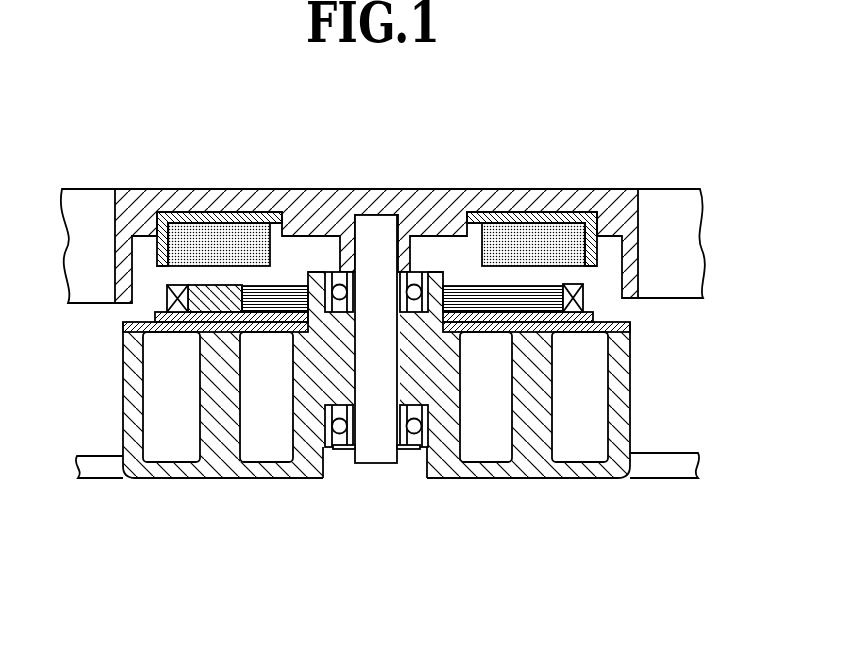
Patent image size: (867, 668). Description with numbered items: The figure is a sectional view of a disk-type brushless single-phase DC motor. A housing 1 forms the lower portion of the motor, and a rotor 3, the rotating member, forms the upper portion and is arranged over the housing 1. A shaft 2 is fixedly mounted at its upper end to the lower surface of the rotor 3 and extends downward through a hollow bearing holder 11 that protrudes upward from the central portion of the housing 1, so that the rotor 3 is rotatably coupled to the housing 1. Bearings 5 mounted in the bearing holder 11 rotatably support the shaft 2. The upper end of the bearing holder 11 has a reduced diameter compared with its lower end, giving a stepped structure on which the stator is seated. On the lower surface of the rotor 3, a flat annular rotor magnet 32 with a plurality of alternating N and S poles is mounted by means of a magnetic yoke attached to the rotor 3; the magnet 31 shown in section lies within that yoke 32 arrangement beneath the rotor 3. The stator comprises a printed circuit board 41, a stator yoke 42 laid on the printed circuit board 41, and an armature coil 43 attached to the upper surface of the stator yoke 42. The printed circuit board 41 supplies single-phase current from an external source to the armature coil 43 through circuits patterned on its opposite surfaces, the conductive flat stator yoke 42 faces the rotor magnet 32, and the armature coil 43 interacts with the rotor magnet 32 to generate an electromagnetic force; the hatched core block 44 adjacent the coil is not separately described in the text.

The housing 1 is at (510, 467).
The shaft 2 is at (380, 235).
The rotor 3 is at (450, 207).
The bearings 5 is at (335, 440).
The bearing holder 11 is at (310, 372).
The permanent magnet 31 is at (235, 237).
The rotor magnet 32 is at (230, 221).
The printed circuit board 41 is at (615, 315).
The stator yoke 42 is at (553, 333).
The armature coil 43 is at (577, 287).
The stator core 44 is at (215, 285).